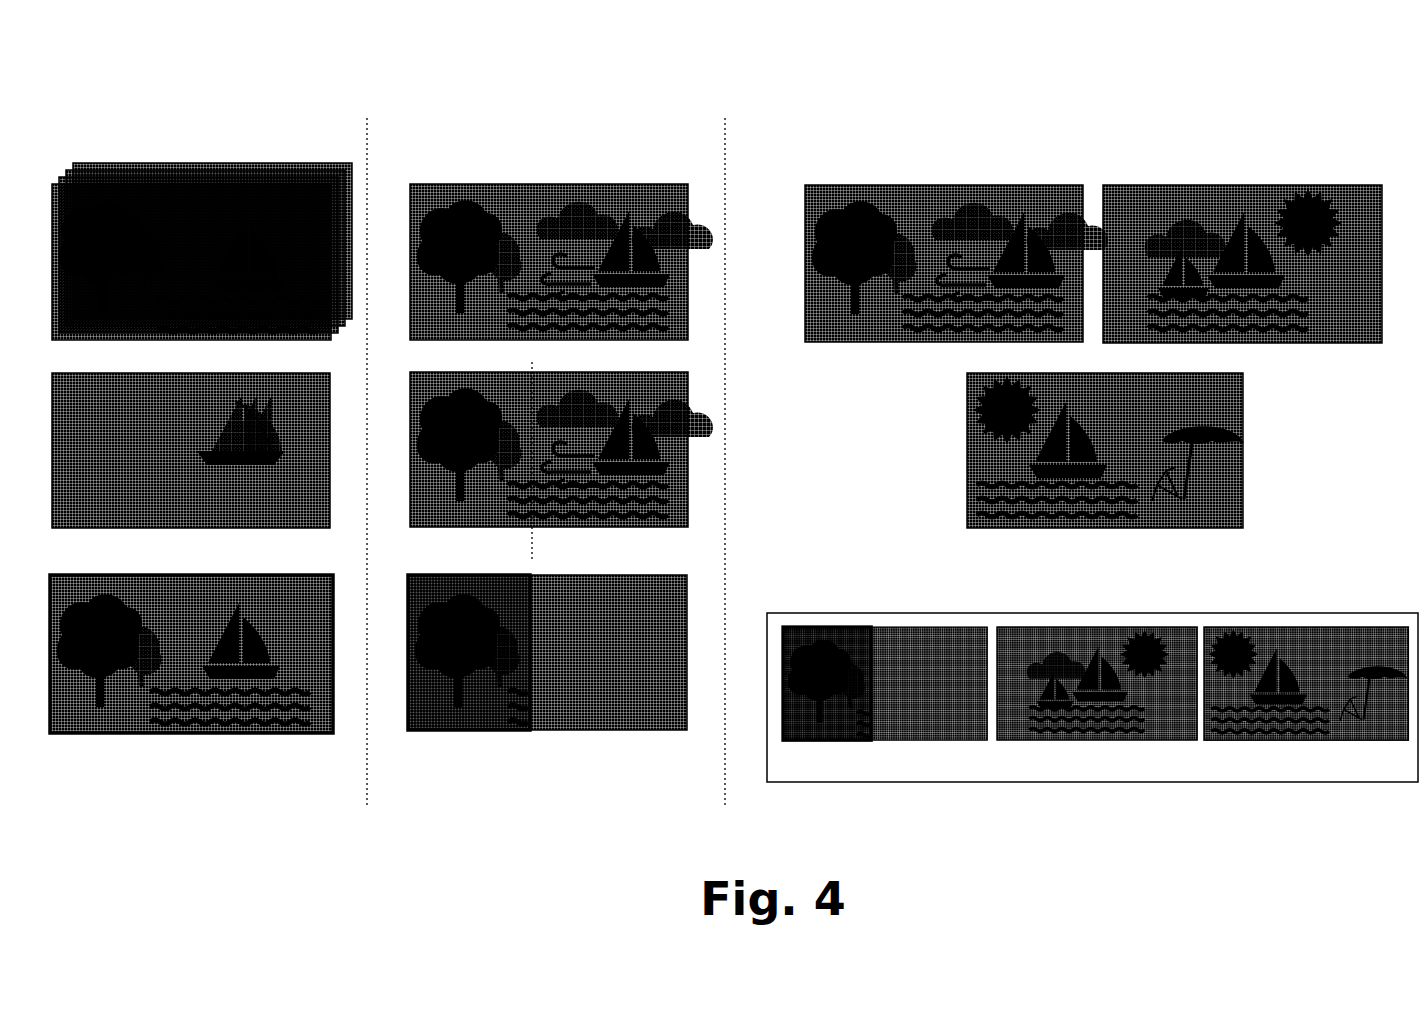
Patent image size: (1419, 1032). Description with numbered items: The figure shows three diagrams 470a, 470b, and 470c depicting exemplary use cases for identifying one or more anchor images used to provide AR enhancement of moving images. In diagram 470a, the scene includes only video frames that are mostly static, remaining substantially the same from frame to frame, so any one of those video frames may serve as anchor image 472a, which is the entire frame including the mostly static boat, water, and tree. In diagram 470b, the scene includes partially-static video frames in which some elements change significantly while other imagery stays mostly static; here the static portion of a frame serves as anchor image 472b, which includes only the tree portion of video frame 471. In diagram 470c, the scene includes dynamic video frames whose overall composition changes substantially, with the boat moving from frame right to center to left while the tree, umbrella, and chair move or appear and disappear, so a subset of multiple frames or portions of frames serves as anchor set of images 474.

The diagram 470a is at (287, 80).
The diagram 470b is at (672, 80).
The diagram 470c is at (1224, 80).
The video frame 471 is at (544, 710).
The anchor image 472a is at (163, 618).
The anchor image 472b is at (469, 652).
The anchor set of images 474 is at (907, 769).